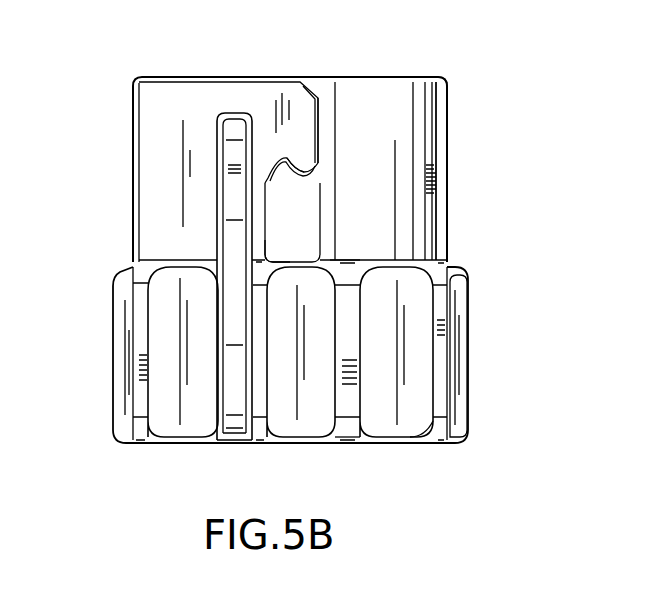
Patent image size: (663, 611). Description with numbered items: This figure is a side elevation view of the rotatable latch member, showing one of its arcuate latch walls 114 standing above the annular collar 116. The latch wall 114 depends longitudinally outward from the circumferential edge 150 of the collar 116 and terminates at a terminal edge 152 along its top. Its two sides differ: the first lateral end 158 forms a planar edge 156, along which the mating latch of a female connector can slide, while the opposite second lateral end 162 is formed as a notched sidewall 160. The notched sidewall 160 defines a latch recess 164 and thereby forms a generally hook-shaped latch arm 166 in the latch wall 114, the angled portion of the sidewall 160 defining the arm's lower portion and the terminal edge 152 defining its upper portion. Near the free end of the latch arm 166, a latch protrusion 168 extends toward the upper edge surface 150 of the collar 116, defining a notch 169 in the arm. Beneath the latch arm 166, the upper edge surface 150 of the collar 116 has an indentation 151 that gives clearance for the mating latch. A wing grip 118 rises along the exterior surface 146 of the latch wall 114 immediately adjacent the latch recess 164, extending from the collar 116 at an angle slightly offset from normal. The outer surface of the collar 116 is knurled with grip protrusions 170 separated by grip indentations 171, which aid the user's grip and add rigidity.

The latch wall 114 is at (140, 133).
The annular collar 116 is at (468, 378).
The wing grip 118 is at (227, 233).
The exterior surface 146 is at (150, 163).
The circumferential edge 150 is at (448, 250).
The indentation 151 is at (340, 263).
The terminal edge 152 is at (420, 77).
The planar edge 156 is at (443, 125).
The first lateral end 158 is at (468, 178).
The notched sidewall 160 is at (267, 266).
The second lateral end 162 is at (333, 133).
The latch recess 164 is at (303, 222).
The latch arm 166 is at (270, 102).
The latch protrusion 168 is at (310, 173).
The notch 169 is at (286, 163).
The grip protrusion 170 is at (350, 410).
The grip indentation 171 is at (410, 423).